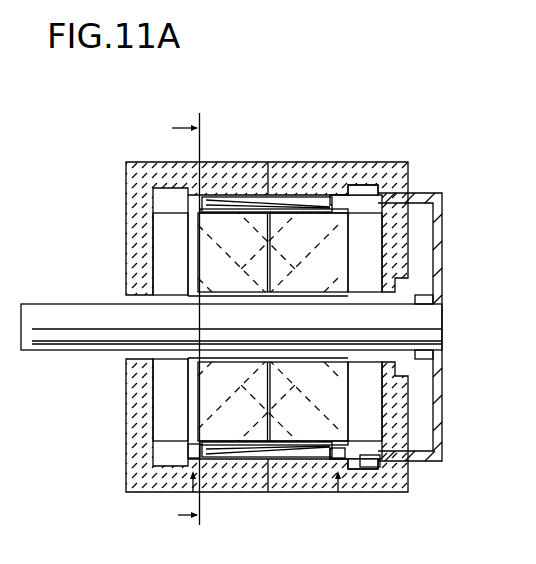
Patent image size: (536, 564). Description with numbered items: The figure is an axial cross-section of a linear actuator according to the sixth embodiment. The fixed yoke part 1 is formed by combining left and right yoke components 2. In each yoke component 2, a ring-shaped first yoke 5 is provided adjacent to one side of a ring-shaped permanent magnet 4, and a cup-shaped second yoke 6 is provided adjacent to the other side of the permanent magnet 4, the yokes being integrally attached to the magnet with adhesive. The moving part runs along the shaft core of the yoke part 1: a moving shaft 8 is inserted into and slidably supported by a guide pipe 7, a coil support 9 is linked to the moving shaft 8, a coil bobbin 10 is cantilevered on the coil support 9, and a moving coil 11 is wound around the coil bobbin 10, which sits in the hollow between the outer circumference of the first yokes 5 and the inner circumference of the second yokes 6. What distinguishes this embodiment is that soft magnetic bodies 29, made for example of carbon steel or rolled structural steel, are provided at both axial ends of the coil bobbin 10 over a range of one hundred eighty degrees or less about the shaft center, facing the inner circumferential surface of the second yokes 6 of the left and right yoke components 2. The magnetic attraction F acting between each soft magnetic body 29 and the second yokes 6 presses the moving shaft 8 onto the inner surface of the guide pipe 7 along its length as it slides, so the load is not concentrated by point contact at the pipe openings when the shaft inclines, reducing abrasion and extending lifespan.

The yoke part 1 is at (268, 128).
The yoke component 2 is at (406, 93).
The permanent magnet 4 is at (358, 228).
The first yoke 5 is at (339, 215).
The second yoke 6 is at (311, 165).
The guide pipe 7 is at (188, 298).
The moving shaft 8 is at (80, 338).
The coil support 9 is at (442, 258).
The coil bobbin 10 is at (368, 467).
The moving coil 11 is at (236, 203).
The soft magnetic body 29 is at (189, 453).